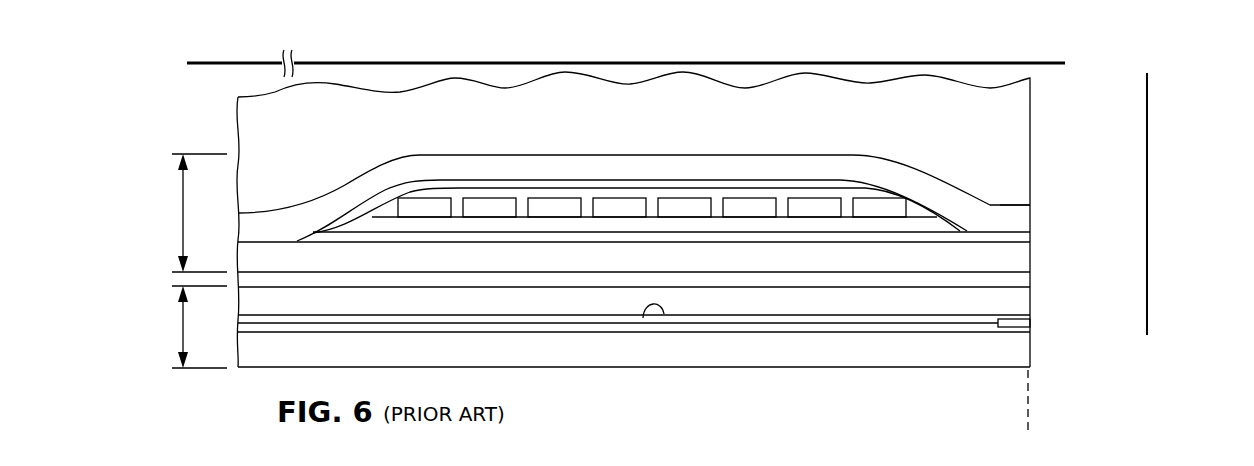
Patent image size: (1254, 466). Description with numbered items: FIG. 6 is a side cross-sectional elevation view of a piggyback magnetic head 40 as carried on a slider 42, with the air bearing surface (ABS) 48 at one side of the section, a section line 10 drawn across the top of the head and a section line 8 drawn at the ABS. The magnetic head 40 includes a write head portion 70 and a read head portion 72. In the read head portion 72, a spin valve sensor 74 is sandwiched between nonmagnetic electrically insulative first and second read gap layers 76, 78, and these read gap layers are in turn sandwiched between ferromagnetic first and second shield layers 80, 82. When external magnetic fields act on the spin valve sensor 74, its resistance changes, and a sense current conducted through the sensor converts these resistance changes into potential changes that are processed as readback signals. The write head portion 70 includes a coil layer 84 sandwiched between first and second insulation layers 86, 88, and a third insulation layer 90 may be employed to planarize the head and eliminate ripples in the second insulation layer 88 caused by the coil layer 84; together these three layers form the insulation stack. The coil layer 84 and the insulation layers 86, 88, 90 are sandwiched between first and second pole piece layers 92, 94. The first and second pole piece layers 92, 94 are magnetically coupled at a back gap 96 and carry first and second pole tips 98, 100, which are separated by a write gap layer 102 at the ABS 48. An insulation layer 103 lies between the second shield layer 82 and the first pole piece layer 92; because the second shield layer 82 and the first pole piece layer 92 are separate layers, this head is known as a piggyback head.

The section line 10- 10 is at (1055, 48).
The section line 8- 8 is at (1200, 327).
The magnetic head 40 is at (212, 104).
The slider 42 is at (1015, 109).
The second pole piece layer 94 is at (810, 157).
The second pole tip 100 is at (1023, 215).
The third insulation layer 90 is at (462, 185).
The second insulation layer 88 is at (917, 207).
The coil layer 84 is at (680, 203).
The first insulation layer 86 is at (592, 225).
The write gap layer 102 is at (1030, 237).
The first pole tip 98 is at (1030, 258).
The first pole piece layer 92 is at (948, 258).
The insulation layer 103 is at (855, 277).
The second shield layer 82 is at (900, 302).
The second read gap layer 78 is at (643, 318).
The first read gap layer 76 is at (698, 332).
The first shield layer 80 is at (797, 353).
The spin valve sensor 74 is at (1030, 322).
The back gap 96 is at (278, 233).
The air bearing surface 48 is at (1028, 420).
The write head portion 70 is at (183, 217).
The read head portion 72 is at (183, 332).